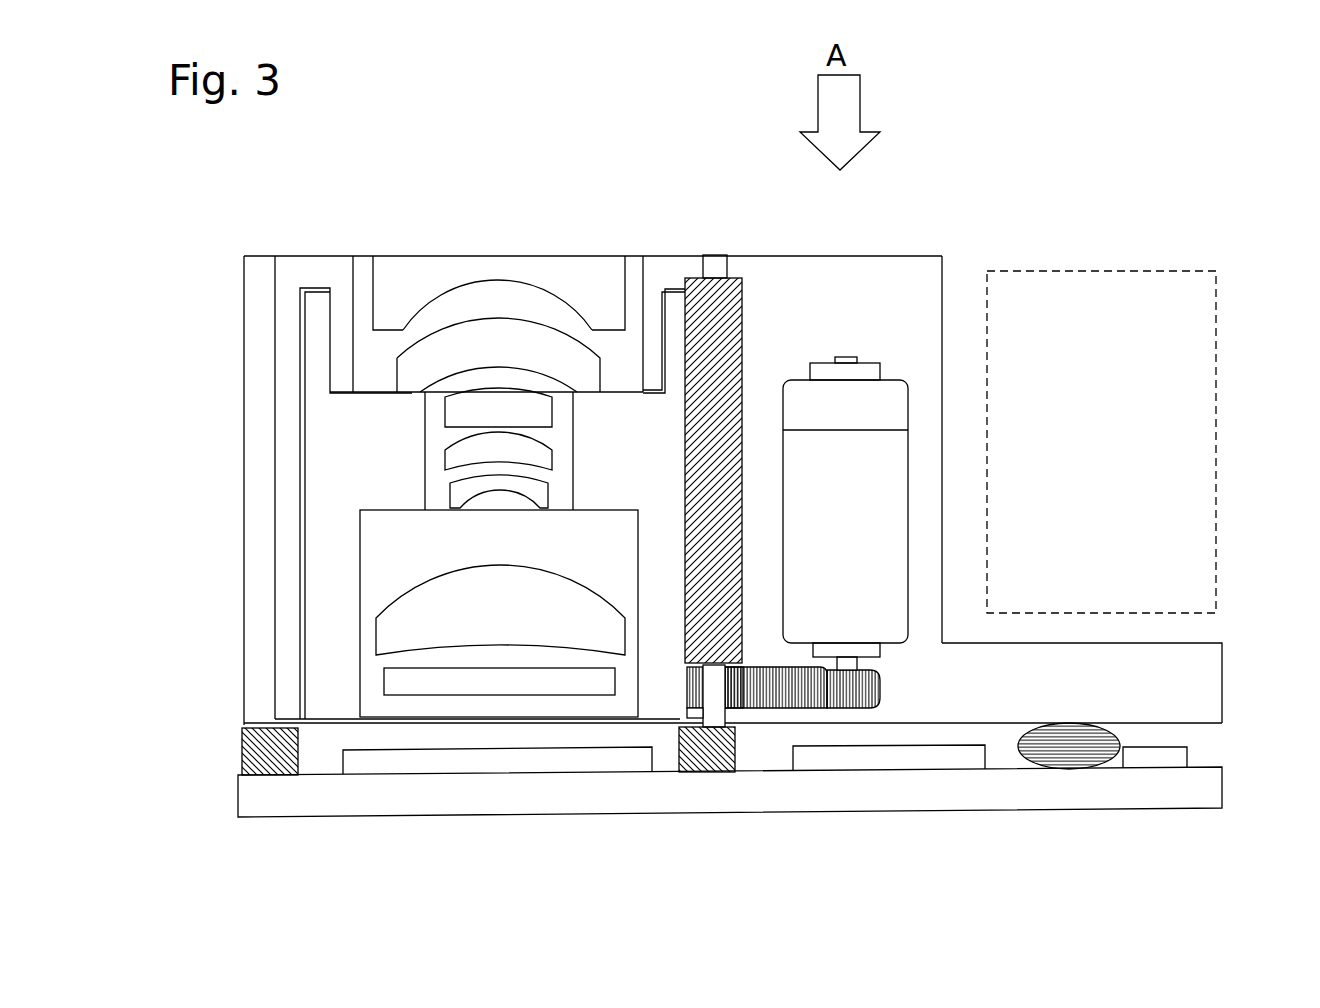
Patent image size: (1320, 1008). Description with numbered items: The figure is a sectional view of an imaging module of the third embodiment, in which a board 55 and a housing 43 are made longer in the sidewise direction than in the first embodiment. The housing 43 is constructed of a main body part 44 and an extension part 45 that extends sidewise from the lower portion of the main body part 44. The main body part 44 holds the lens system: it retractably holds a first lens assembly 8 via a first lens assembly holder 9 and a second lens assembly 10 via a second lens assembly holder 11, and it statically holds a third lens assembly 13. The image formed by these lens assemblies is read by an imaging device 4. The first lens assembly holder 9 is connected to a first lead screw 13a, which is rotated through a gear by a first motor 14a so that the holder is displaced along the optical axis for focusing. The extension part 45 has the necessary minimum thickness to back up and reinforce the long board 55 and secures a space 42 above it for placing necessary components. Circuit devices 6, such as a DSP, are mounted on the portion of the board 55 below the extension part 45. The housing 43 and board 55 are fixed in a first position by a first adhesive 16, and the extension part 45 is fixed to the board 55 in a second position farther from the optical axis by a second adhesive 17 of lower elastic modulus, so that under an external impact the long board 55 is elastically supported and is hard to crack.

The imaging device 4 is at (595, 763).
The circuit devices 6 is at (897, 757).
The first lens assembly 8 is at (232, 388).
The first lens assembly holder 9 is at (295, 275).
The second lens assembly 10 is at (412, 502).
The second lens assembly holder 11 is at (325, 507).
The third lens assembly 13 is at (393, 637).
The first lead screw 13a is at (745, 322).
The first motor 14a is at (872, 507).
The first adhesive 16 is at (240, 757).
The second adhesive 17 is at (1078, 755).
The space 42 is at (1123, 320).
The housing 43 is at (933, 230).
The main body part 44 is at (912, 305).
The extension part 45 is at (1102, 675).
The board 55 is at (540, 805).